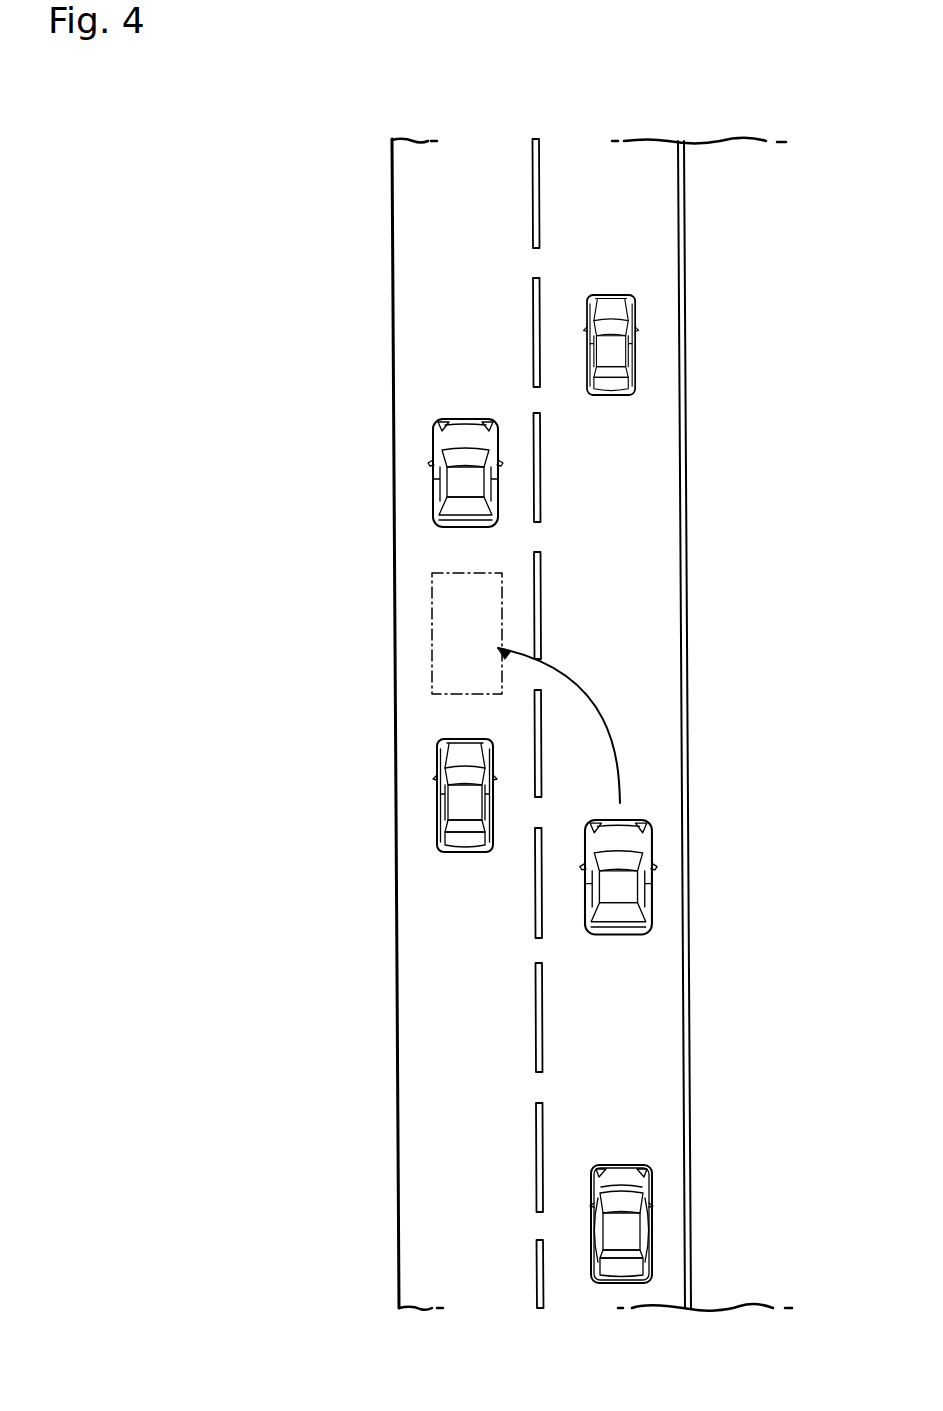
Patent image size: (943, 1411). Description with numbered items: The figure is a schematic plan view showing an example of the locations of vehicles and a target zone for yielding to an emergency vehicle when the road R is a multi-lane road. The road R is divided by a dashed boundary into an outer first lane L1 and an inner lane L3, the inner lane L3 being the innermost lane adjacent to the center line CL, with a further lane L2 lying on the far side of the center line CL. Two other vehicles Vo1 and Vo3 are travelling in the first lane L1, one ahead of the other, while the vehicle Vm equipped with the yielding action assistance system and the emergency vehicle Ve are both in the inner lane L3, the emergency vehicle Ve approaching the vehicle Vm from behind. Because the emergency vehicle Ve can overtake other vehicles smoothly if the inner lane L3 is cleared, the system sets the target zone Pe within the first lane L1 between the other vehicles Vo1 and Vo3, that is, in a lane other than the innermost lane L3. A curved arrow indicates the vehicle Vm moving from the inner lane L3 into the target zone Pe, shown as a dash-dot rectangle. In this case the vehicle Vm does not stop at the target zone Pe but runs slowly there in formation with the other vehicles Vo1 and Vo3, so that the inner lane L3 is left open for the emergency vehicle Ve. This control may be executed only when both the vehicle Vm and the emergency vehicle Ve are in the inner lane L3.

The road R is at (392, 313).
The first lane L1 is at (406, 218).
The second lane (oncoming lane) L2 is at (757, 162).
The inner lane L3 is at (667, 372).
The center line CL is at (685, 245).
The target zone Pe is at (440, 627).
The other vehicle Vo1 is at (437, 797).
The other vehicle Vo3 is at (432, 478).
The vehicle Vm is at (653, 878).
The emergency vehicle Ve is at (652, 1212).